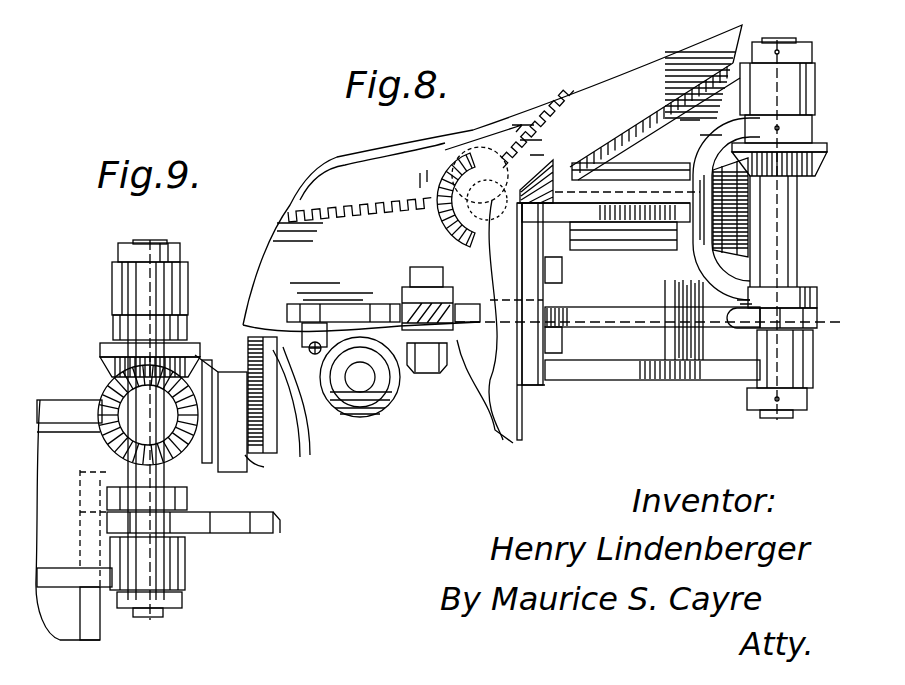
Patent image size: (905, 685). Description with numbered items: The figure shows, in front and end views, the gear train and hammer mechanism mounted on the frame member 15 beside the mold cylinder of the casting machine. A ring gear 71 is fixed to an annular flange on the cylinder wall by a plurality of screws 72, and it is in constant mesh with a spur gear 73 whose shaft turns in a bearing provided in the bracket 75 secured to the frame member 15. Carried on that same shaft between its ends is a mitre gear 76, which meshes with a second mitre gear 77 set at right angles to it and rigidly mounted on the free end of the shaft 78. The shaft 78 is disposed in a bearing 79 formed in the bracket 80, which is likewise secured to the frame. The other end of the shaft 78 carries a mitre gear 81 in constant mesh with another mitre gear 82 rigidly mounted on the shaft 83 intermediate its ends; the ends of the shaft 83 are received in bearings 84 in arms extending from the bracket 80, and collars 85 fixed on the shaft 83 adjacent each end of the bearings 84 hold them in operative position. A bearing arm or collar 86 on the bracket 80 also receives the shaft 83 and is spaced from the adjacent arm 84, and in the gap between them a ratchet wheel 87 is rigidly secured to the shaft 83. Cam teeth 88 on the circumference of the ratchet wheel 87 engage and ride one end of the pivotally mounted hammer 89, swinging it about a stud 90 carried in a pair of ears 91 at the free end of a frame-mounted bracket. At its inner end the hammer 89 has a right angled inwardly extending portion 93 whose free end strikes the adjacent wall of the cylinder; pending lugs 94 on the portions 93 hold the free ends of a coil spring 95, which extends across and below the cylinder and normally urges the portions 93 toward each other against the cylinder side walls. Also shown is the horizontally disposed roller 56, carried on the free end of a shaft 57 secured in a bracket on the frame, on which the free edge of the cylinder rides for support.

In FIG. 9, the frame member 15 is at (67, 633).
In FIG. 8, the roller 56 is at (397, 403).
In FIG. 8, the shaft 57 is at (362, 385).
In FIG. 8, the ring gear 71 is at (431, 153).
In FIG. 8, the screws 72 is at (345, 170).
In FIG. 8, the spur gear 73 is at (478, 181).
In FIG. 9, the spur gear 73 is at (240, 485).
In FIG. 9, the bracket 75 is at (264, 463).
In FIG. 8, the mitre gear 76 is at (455, 250).
In FIG. 9, the mitre gear 76 is at (206, 366).
In FIG. 8, the second mitre gear 77 is at (542, 178).
In FIG. 8, the shaft 78 is at (560, 182).
In FIG. 8, the bearing 79 is at (613, 248).
In FIG. 8, the bracket 80 is at (630, 135).
In FIG. 9, the bracket 80 is at (73, 520).
In FIG. 8, the mitre gear 81 is at (730, 253).
In FIG. 9, the mitre gear 81 is at (108, 398).
In FIG. 8, the mitre gear 82 is at (806, 176).
In FIG. 9, the mitre gear 82 is at (105, 362).
In FIG. 8, the shaft 83 is at (783, 250).
In FIG. 9, the shaft 83 is at (127, 465).
In FIG. 8, the bearings 84 is at (798, 92).
In FIG. 9, the bearings 84 is at (112, 294).
In FIG. 8, the collars 85 is at (800, 55).
In FIG. 9, the collars 85 is at (120, 252).
In FIG. 8, the bearing arm or collar 86 is at (800, 293).
In FIG. 9, the bearing arm or collar 86 is at (120, 500).
In FIG. 8, the ratchet wheel 87 is at (565, 0).
In FIG. 9, the ratchet wheel 87 is at (118, 523).
In FIG. 8, the cam teeth 88 is at (255, 0).
In FIG. 8, the hammer 89 is at (600, 317).
In FIG. 8, the stud 90 is at (410, 277).
In FIG. 8, the ears 91 is at (473, 343).
In FIG. 9, the right angled inwardly extending portion 93 is at (263, 525).
In FIG. 8, the pending lugs 94 is at (285, 322).
In FIG. 8, the coil spring 95 is at (323, 430).